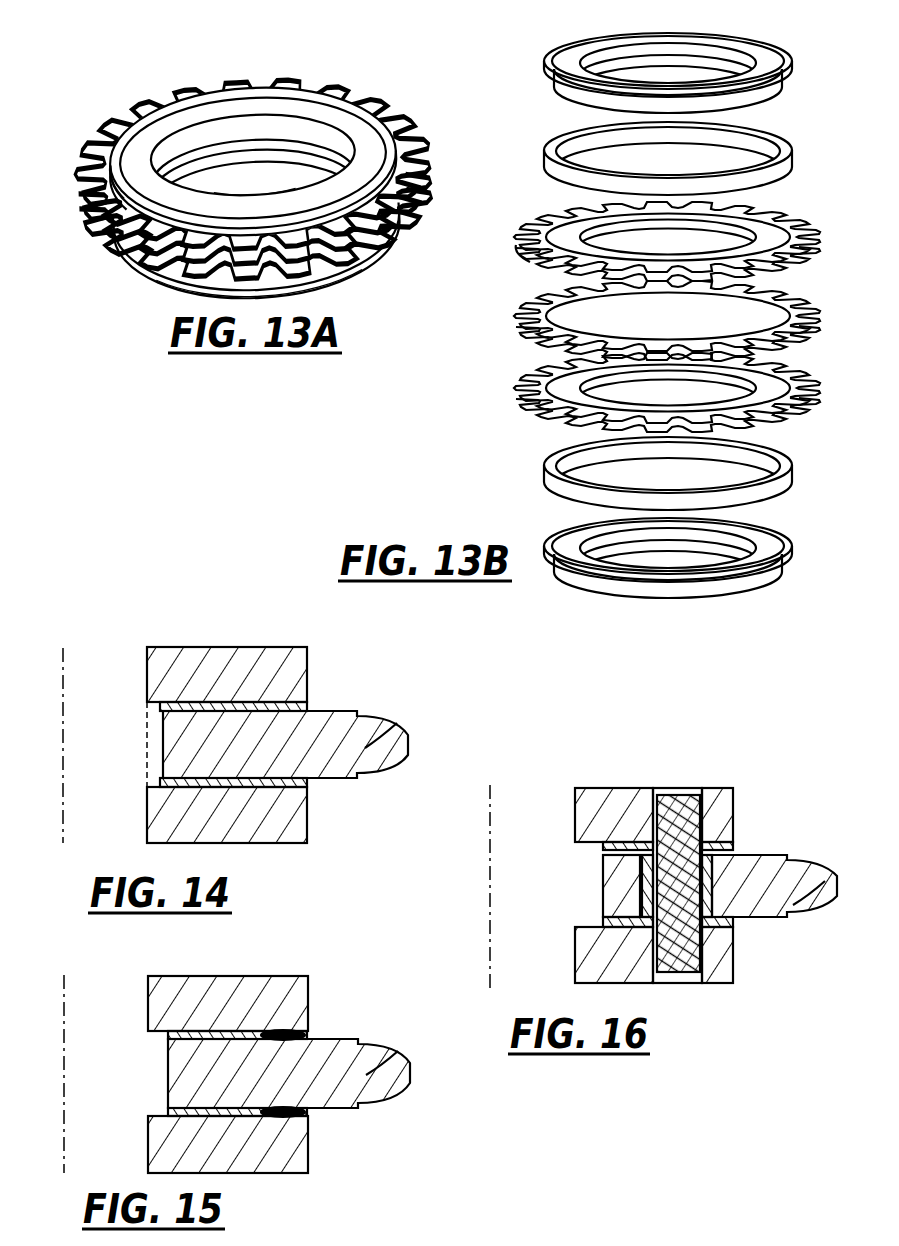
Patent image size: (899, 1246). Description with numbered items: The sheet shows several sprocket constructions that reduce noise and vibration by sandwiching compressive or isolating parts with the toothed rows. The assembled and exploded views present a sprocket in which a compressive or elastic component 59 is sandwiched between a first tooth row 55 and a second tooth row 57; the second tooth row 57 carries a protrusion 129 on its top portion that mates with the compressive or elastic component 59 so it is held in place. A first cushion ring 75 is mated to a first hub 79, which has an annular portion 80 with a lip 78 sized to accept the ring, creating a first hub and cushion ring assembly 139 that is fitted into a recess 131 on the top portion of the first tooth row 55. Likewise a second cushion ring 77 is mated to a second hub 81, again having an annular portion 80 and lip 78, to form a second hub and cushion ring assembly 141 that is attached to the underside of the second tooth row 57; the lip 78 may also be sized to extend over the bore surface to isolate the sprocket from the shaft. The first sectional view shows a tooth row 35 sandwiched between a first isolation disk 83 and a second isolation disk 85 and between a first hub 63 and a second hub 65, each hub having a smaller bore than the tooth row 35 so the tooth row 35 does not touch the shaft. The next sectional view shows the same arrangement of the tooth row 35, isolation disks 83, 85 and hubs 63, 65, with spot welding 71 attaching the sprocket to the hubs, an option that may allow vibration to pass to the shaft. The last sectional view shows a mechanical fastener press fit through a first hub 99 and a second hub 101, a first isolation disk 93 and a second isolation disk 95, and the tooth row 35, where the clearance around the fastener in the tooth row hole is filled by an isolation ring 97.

In FIG. 13A, the first hub and cushion ring assembly 139 is at (150, 126).
In FIG. 13A, the first hub 79 is at (97, 158).
In FIG. 13B, the first hub 79 is at (568, 50).
In FIG. 13A, the first cushion ring 75 is at (118, 195).
In FIG. 13B, the first cushion ring 75 is at (548, 163).
In FIG. 13A, the first tooth row 55 is at (88, 196).
In FIG. 13B, the first tooth row 55 is at (530, 254).
In FIG. 13A, the compressive or elastic component 59 is at (96, 224).
In FIG. 13B, the compressive or elastic component 59 is at (528, 312).
In FIG. 13A, the second tooth row 57 is at (104, 232).
In FIG. 13B, the second tooth row 57 is at (527, 388).
In FIG. 13A, the second cushion ring 77 is at (148, 262).
In FIG. 13B, the second cushion ring 77 is at (548, 480).
In FIG. 13A, the second hub and cushion ring assembly 141 is at (190, 275).
In FIG. 13A, the second hub 81 is at (188, 286).
In FIG. 13B, the second hub 81 is at (563, 555).
In FIG. 13B, the lip 78 is at (563, 93).
In FIG. 13B, the annular portion 80 is at (785, 76).
In FIG. 13B, the recess 131 is at (758, 232).
In FIG. 13B, the protrusion 129 is at (770, 380).
In FIG. 14, the first hub 63 is at (162, 658).
In FIG. 15, the first hub 63 is at (164, 992).
In FIG. 14, the second hub 65 is at (162, 820).
In FIG. 15, the second hub 65 is at (164, 1158).
In FIG. 14, the first isolation disk 83 is at (310, 705).
In FIG. 15, the first isolation disk 83 is at (172, 1035).
In FIG. 14, the second isolation disk 85 is at (310, 785).
In FIG. 15, the second isolation disk 85 is at (172, 1112).
In FIG. 14, the tooth row 35 is at (368, 746).
In FIG. 15, the tooth row 35 is at (348, 1074).
In FIG. 16, the tooth row 35 is at (618, 902).
In FIG. 15, the spot welding 71 is at (296, 1030).
In FIG. 16, the first hub 99 is at (593, 797).
In FIG. 16, the second hub 101 is at (583, 965).
In FIG. 16, the first isolation disk 93 is at (605, 848).
In FIG. 16, the second isolation disk 95 is at (605, 922).
In FIG. 16, the isolation ring 97 is at (640, 875).